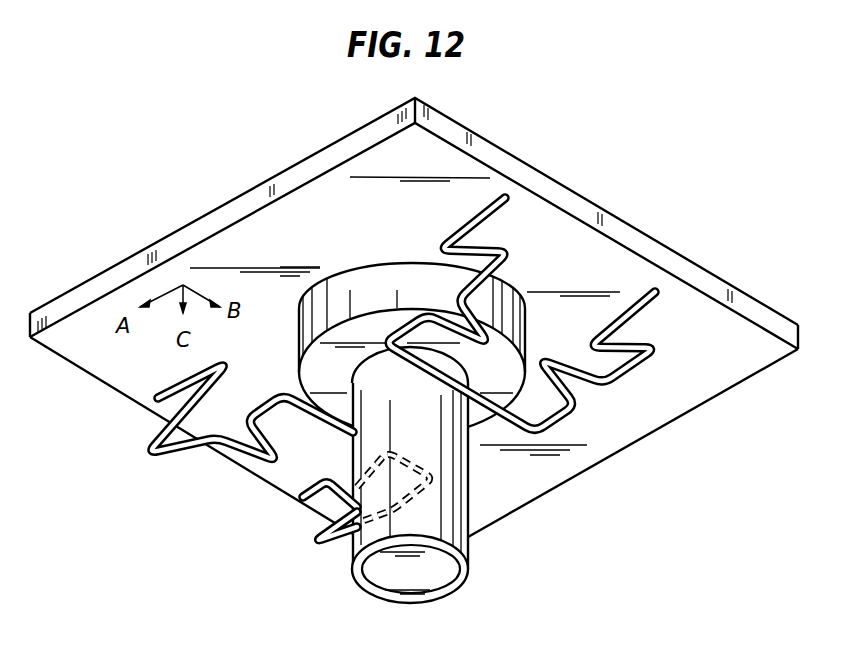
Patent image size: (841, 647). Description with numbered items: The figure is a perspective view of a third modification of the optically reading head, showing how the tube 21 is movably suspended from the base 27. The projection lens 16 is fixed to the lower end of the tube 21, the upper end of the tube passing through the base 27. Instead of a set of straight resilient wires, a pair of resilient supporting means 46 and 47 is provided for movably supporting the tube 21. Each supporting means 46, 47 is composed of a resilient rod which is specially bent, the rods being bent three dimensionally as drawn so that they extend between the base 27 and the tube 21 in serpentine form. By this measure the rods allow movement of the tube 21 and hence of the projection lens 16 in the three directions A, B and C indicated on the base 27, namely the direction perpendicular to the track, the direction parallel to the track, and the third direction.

The base 27 is at (260, 187).
The resilient supporting means 46 is at (165, 458).
The resilient supporting means 47 is at (637, 377).
The tube 21 is at (470, 512).
The projection lens 16 is at (447, 577).